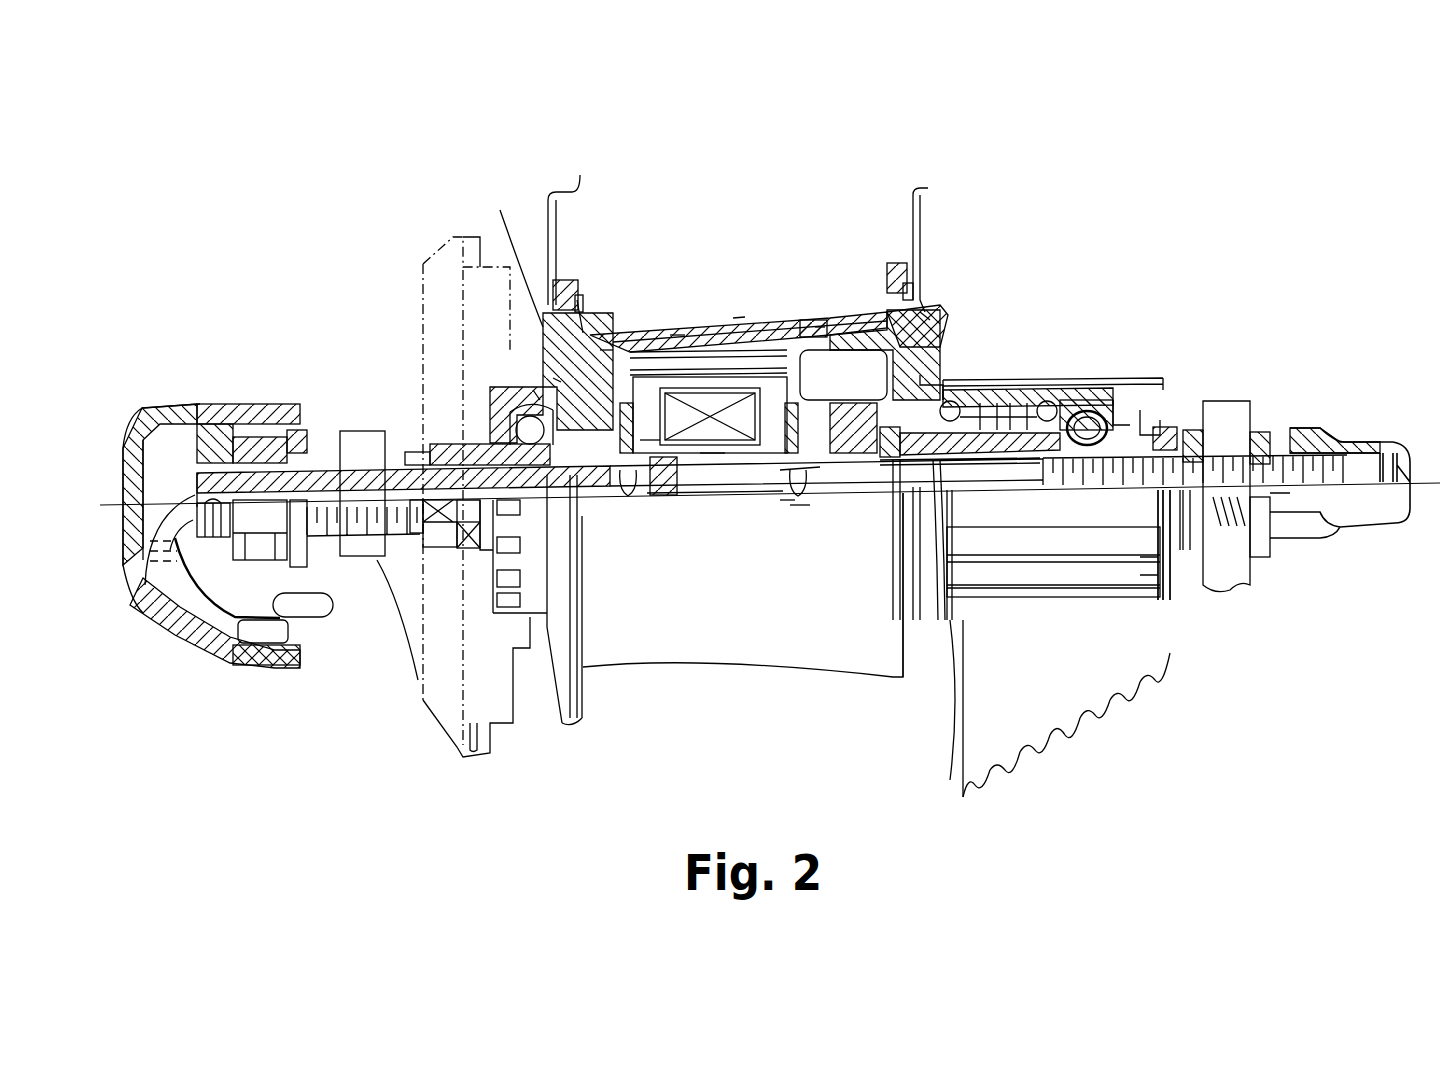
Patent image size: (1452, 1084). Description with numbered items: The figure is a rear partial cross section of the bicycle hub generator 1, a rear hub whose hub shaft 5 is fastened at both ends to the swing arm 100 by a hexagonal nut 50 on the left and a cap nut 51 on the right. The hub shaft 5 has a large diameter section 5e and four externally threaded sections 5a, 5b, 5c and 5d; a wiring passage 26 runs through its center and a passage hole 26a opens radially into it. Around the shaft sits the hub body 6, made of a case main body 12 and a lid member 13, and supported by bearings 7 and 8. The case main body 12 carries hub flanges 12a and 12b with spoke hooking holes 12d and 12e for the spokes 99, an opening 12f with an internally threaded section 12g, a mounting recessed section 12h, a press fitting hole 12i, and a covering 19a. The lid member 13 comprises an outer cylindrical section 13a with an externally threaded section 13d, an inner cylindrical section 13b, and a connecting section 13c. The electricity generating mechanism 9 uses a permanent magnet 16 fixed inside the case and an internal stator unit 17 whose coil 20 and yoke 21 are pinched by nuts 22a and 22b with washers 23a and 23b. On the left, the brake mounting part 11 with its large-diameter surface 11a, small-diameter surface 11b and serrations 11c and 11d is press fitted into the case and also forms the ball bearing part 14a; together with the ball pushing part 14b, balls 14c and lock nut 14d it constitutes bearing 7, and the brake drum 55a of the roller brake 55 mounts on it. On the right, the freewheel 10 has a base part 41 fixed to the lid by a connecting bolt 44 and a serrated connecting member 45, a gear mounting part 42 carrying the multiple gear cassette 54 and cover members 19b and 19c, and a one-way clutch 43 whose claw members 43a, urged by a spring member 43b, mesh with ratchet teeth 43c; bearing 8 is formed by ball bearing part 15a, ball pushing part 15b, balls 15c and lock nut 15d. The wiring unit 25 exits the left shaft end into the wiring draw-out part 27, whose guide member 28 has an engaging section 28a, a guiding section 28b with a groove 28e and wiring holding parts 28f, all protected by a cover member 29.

The bicycle hub generator 1 is at (752, 240).
The hub shaft 5 is at (1035, 472).
The externally threaded section 5a is at (375, 565).
The externally threaded section 5b is at (613, 577).
The externally threaded section 5c is at (800, 507).
The externally threaded section 5d is at (1182, 385).
The large diameter section 5e is at (707, 327).
The hub body 6 is at (734, 318).
The bearing 7 is at (513, 537).
The bearing 8 is at (1097, 383).
The electricity generating mechanism 9 is at (773, 388).
The freewheel 10 is at (1073, 383).
The brake mounting part 11 is at (540, 377).
The large-diameter radially outward facing surface 11a is at (533, 380).
The small-diameter radially outward facing surface 11b is at (583, 330).
The serrations 11c is at (557, 380).
The serrations 11d is at (490, 547).
The case main body 12 is at (603, 343).
The hub flange 12a is at (560, 285).
The hub flange 12b is at (900, 297).
The spoke hooking holes 12d is at (535, 390).
The spoke hooking holes 12e is at (925, 300).
The opening 12f is at (925, 312).
The internally threaded section 12g is at (820, 327).
The mounting recessed section 12h is at (487, 283).
The press fitting hole 12i is at (600, 355).
The lid member 13 is at (945, 345).
The outer cylindrical section 13a is at (845, 365).
The inner cylindrical section 13b is at (858, 430).
The connecting section 13c is at (940, 372).
The externally threaded section 13d is at (850, 337).
The ball bearing part 14a is at (549, 630).
The ball pushing part 14b is at (430, 440).
The balls 14c is at (523, 427).
The lock nut 14d is at (433, 543).
The ball bearing part 15a is at (1047, 383).
The ball pushing part 15b is at (1130, 385).
The balls 15c is at (1087, 483).
The lock nut 15d is at (1193, 420).
The permanent magnet 16 is at (750, 335).
The internal stator unit 17 is at (680, 383).
The covering 19a is at (483, 410).
The cover member 19b is at (1120, 383).
The cover member 19c is at (1170, 385).
The coil 20 is at (745, 467).
The yoke 21 is at (712, 430).
The nut 22a is at (652, 440).
The nut 22b is at (812, 455).
The washer 23a is at (675, 335).
The washer 23b is at (788, 500).
The wiring unit 25 is at (150, 477).
The wiring passage 26 is at (318, 617).
The passage hole 26a is at (652, 437).
The wiring draw-out part 27 is at (220, 665).
The guide member 28 is at (215, 600).
The engaging section 28a is at (253, 455).
The guiding section 28b is at (235, 645).
The groove 28e is at (262, 665).
The wiring holding parts 28f is at (145, 545).
The cover member 29 is at (213, 650).
The base part 41 is at (957, 620).
The gear mounting part 42 is at (1033, 383).
The one-way clutch 43 is at (967, 440).
The claw members 43a is at (1017, 383).
The spring member 43b is at (1020, 383).
The ratchet teeth 43c is at (938, 620).
The connecting bolt 44 is at (915, 620).
The connecting member 45 is at (893, 640).
The nut 50 is at (240, 440).
The nut 51 is at (1305, 428).
The multiple gear cassette 54 is at (1175, 657).
The roller brake 55 is at (425, 257).
The brake drum 55a is at (487, 250).
The spokes 99 is at (575, 192).
The swing arm 100 is at (345, 437).